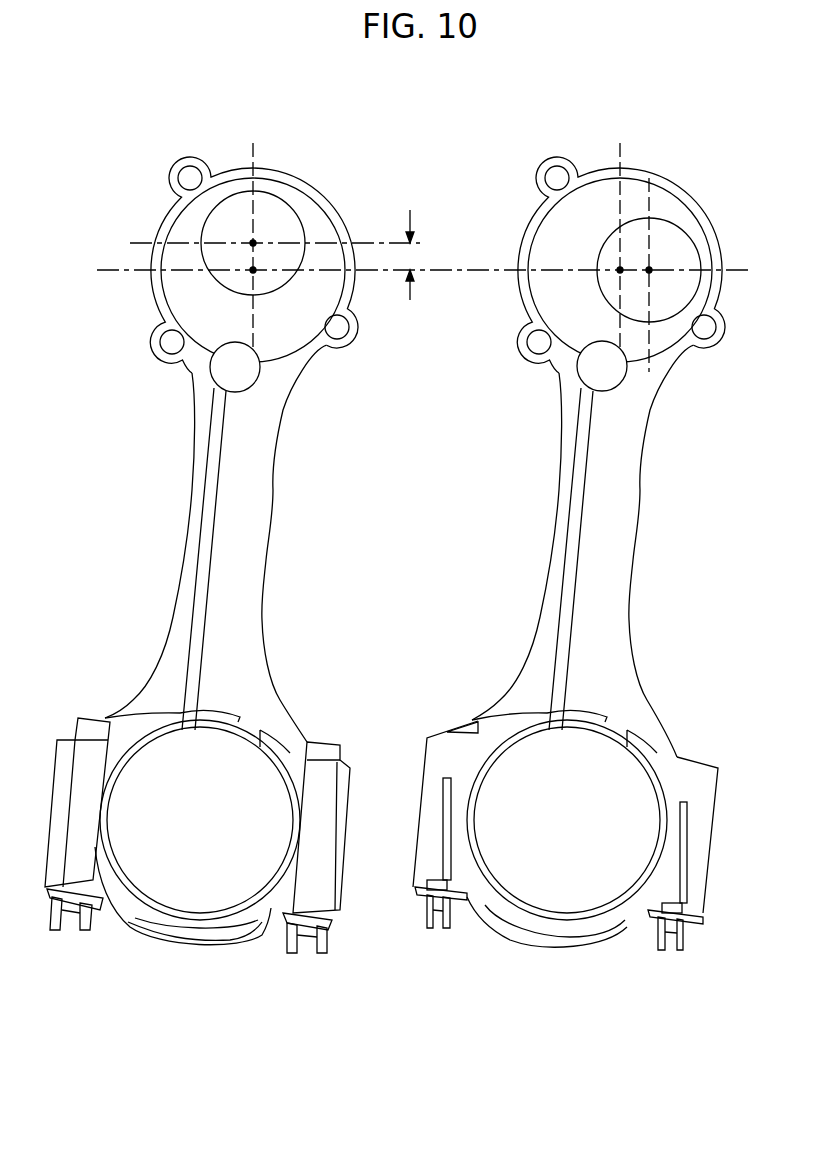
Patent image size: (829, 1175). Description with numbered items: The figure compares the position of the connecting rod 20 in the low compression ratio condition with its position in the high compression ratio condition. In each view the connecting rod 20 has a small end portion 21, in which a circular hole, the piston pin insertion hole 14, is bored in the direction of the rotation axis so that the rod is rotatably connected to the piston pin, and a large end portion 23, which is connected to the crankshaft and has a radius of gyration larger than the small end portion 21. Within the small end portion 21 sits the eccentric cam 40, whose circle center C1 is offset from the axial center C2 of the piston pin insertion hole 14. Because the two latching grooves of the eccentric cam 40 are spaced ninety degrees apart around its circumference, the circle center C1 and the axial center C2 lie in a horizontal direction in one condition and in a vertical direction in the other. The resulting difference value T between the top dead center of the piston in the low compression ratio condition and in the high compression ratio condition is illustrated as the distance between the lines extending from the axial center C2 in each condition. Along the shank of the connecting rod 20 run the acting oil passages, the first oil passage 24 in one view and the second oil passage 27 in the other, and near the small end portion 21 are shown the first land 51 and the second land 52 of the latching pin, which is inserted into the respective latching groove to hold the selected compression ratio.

The piston pin insertion hole 14 is at (272, 215).
The connecting rod 20 is at (190, 490).
The small end portion 21 is at (331, 194).
The large end portion 23 is at (185, 938).
The first oil passage 24 is at (570, 543).
The second oil passage 27 is at (203, 543).
The eccentric cam 40 is at (175, 293).
The first land 51 is at (587, 374).
The second land 52 is at (220, 374).
The circle center of the eccentric cam C1 is at (253, 270).
The axial center of the piston pin insertion hole C2 is at (253, 243).
The difference value T is at (420, 255).